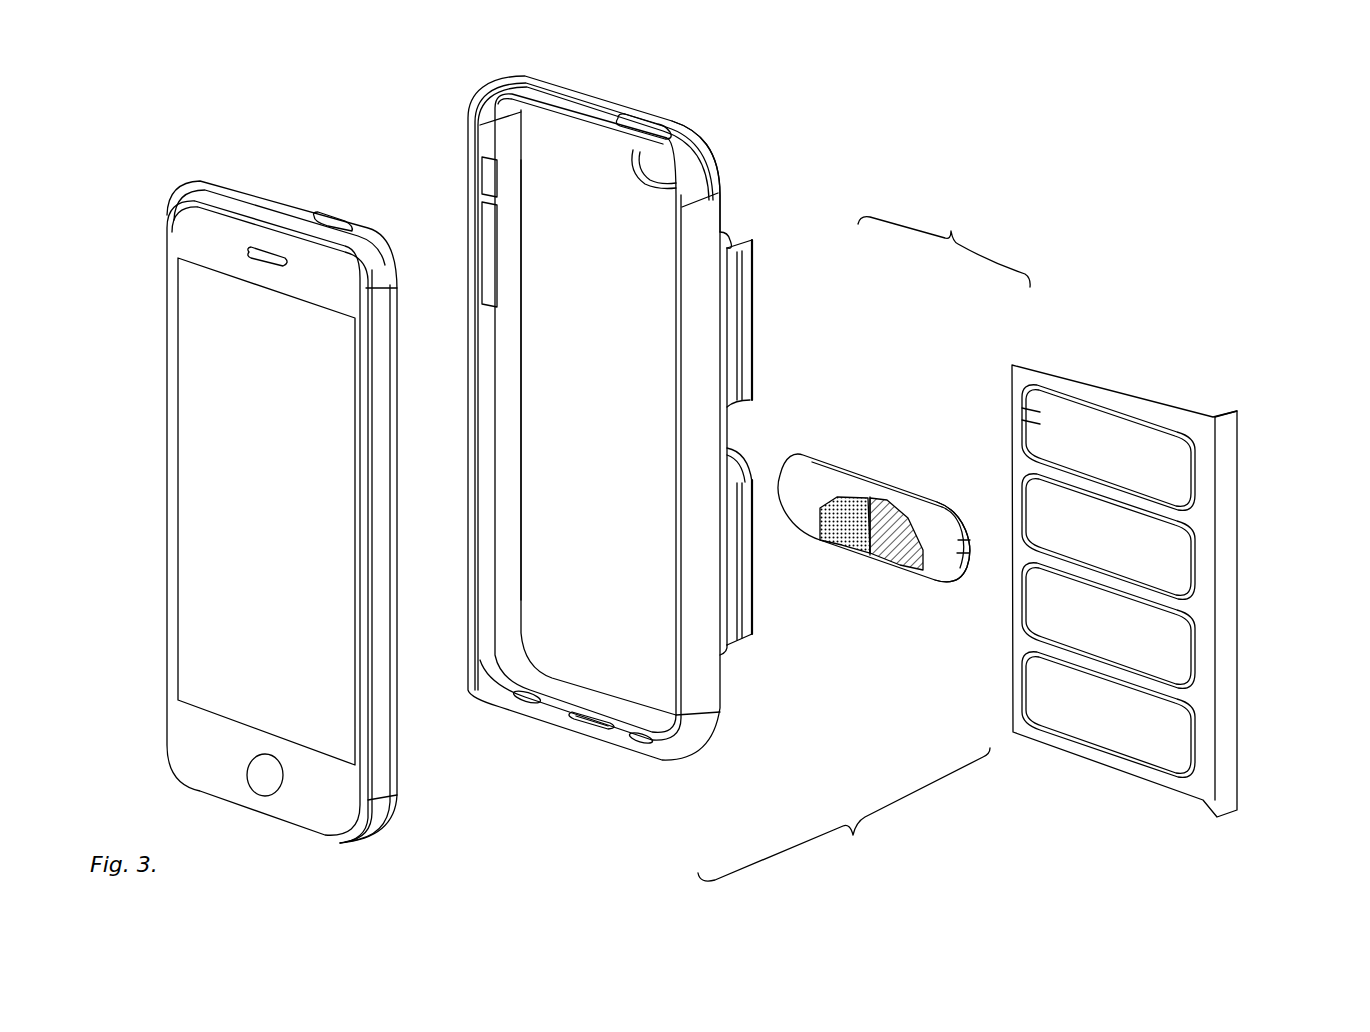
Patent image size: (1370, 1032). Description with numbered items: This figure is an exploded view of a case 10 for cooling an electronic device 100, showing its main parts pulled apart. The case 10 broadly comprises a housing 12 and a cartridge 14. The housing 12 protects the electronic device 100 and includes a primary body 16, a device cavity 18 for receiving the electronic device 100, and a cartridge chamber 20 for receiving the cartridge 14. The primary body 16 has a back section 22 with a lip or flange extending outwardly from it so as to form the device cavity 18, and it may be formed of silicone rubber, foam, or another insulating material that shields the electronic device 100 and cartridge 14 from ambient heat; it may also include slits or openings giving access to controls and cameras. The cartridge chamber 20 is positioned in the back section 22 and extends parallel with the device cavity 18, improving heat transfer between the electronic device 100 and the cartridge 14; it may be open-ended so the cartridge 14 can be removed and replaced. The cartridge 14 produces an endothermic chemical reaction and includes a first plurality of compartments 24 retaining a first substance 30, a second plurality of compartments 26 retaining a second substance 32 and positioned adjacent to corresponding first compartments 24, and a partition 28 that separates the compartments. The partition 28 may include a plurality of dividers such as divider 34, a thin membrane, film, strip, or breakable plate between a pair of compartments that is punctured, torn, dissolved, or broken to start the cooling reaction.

The case 10 is at (622, 418).
The housing 12 is at (712, 140).
The cartridge 14 is at (1151, 591).
The primary body 16 is at (718, 205).
The device cavity 18 is at (578, 237).
The cartridge chamber 20 is at (745, 340).
The back section 22 is at (762, 272).
The first plurality of compartments 24 is at (874, 525).
The second plurality of compartments 26 is at (900, 560).
The partition 28 is at (1087, 480).
The first substance 30 is at (833, 520).
The second substance 32 is at (893, 523).
The divider 34 is at (850, 550).
The electronic device 100 is at (275, 183).